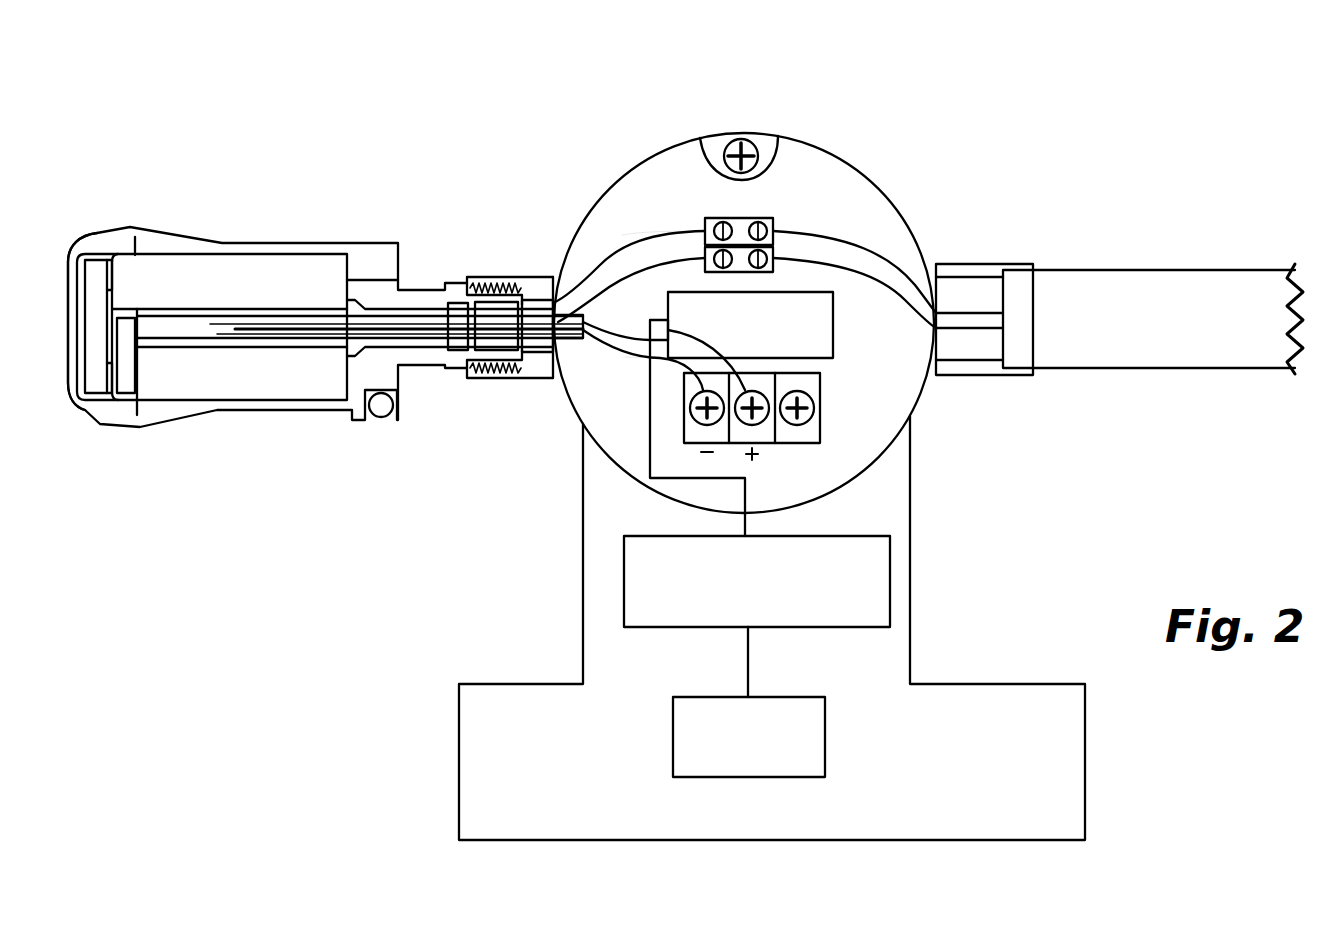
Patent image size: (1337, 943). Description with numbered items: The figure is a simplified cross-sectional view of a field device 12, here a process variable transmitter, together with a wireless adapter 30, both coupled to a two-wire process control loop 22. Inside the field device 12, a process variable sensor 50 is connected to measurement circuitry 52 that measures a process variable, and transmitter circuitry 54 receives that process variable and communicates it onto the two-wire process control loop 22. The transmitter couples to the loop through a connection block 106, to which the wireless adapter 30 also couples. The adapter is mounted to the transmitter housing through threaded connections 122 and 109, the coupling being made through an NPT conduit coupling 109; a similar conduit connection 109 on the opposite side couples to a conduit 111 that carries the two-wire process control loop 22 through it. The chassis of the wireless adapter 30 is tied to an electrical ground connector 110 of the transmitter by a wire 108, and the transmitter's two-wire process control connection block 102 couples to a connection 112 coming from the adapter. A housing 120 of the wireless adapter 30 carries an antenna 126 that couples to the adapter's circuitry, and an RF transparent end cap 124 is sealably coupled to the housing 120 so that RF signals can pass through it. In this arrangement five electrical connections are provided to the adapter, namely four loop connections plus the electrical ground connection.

The field device 12 is at (858, 116).
The two-wire process control loop 22 is at (598, 298).
The wireless adapter 30 is at (538, 345).
The process variable sensor 50 is at (825, 740).
The measurement circuitry 52 is at (890, 592).
The transmitter circuitry 54 is at (822, 353).
The two-wire process control connection block 102 is at (820, 398).
The connection block 106 is at (745, 218).
The wire 108 is at (622, 235).
The NPT conduit coupling 109 is at (523, 378).
The electrical ground connector 110 is at (748, 138).
The conduit 111 is at (1078, 312).
The connection 112 is at (625, 357).
The housing 120 is at (262, 243).
The threaded connection 122 is at (482, 377).
The RF transparent end cap 124 is at (65, 392).
The antenna 126 is at (95, 272).